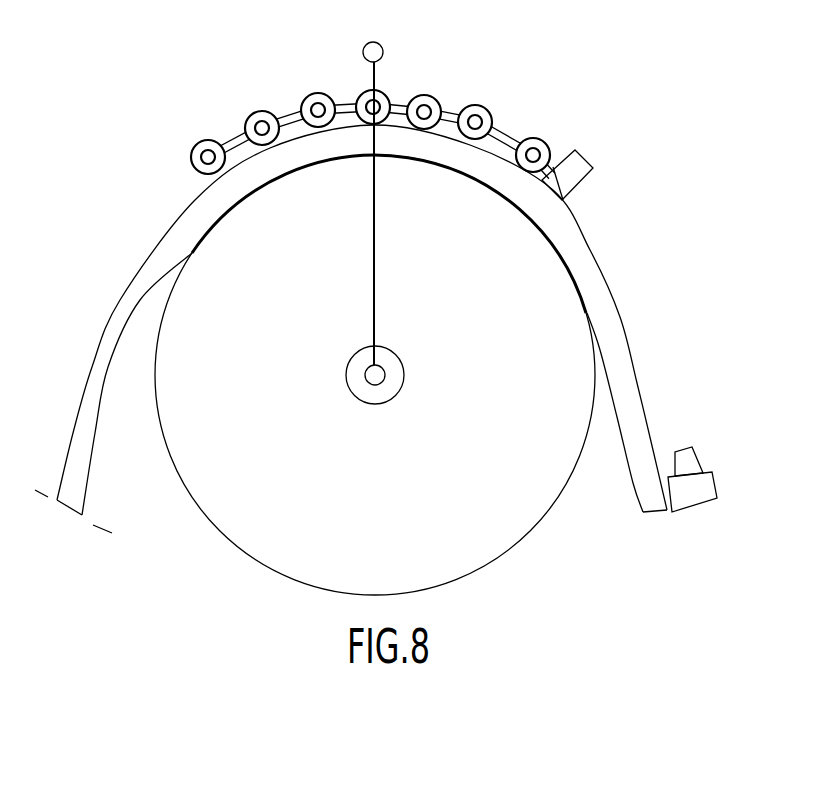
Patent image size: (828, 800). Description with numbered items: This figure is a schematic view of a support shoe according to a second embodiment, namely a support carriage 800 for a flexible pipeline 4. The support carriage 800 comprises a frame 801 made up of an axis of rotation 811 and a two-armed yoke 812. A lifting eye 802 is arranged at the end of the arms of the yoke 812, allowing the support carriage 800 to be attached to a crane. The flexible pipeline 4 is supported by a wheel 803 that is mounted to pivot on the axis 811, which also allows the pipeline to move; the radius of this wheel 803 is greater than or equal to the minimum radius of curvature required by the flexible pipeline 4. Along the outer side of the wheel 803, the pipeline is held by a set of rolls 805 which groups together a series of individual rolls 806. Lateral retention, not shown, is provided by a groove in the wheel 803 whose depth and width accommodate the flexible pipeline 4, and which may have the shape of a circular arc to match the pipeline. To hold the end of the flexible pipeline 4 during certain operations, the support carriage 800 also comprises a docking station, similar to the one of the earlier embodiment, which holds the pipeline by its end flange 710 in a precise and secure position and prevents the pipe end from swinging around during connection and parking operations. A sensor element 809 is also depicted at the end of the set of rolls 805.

The flexible pipeline 4 is at (102, 395).
The support carriage 800 is at (302, 114).
The frame 801 is at (232, 580).
The lifting eye 802 is at (383, 49).
The wheel 803 is at (197, 507).
The set of rolls 805 is at (228, 135).
The rolls 806 is at (261, 112).
The sensor 809 is at (590, 168).
The axis of rotation 811 is at (383, 381).
The two-armed yoke 812 is at (375, 289).
The end flange 710 is at (700, 462).